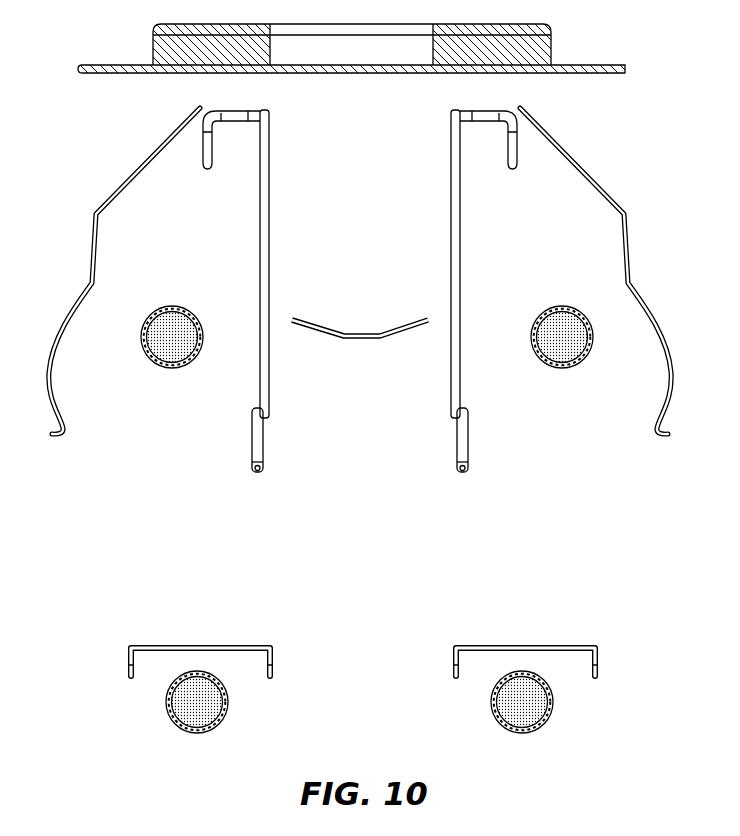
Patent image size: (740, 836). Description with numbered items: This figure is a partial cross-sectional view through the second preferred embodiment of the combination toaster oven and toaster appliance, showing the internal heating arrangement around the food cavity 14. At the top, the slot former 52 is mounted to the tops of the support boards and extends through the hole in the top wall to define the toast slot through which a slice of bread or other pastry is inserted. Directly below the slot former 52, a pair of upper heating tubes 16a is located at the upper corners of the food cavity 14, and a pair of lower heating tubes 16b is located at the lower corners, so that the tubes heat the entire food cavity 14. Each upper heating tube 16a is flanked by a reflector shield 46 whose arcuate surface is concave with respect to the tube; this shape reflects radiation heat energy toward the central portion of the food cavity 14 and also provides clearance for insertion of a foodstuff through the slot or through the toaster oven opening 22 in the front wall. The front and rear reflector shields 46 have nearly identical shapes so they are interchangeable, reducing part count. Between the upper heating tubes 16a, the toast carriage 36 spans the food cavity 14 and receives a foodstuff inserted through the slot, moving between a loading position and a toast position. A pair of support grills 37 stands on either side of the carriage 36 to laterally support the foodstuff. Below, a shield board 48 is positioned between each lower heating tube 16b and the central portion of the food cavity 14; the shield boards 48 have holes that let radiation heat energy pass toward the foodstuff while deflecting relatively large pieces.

The slot former 52 is at (545, 44).
The reflector shield 46 is at (92, 252).
The support grill 37 is at (261, 232).
The toast carriage 36 is at (365, 340).
The upper heating tube 16a is at (172, 368).
The toaster oven opening 22 is at (118, 513).
The food cavity 14 is at (282, 518).
The shield board 48 is at (127, 665).
The lower heating tube 16b is at (198, 733).